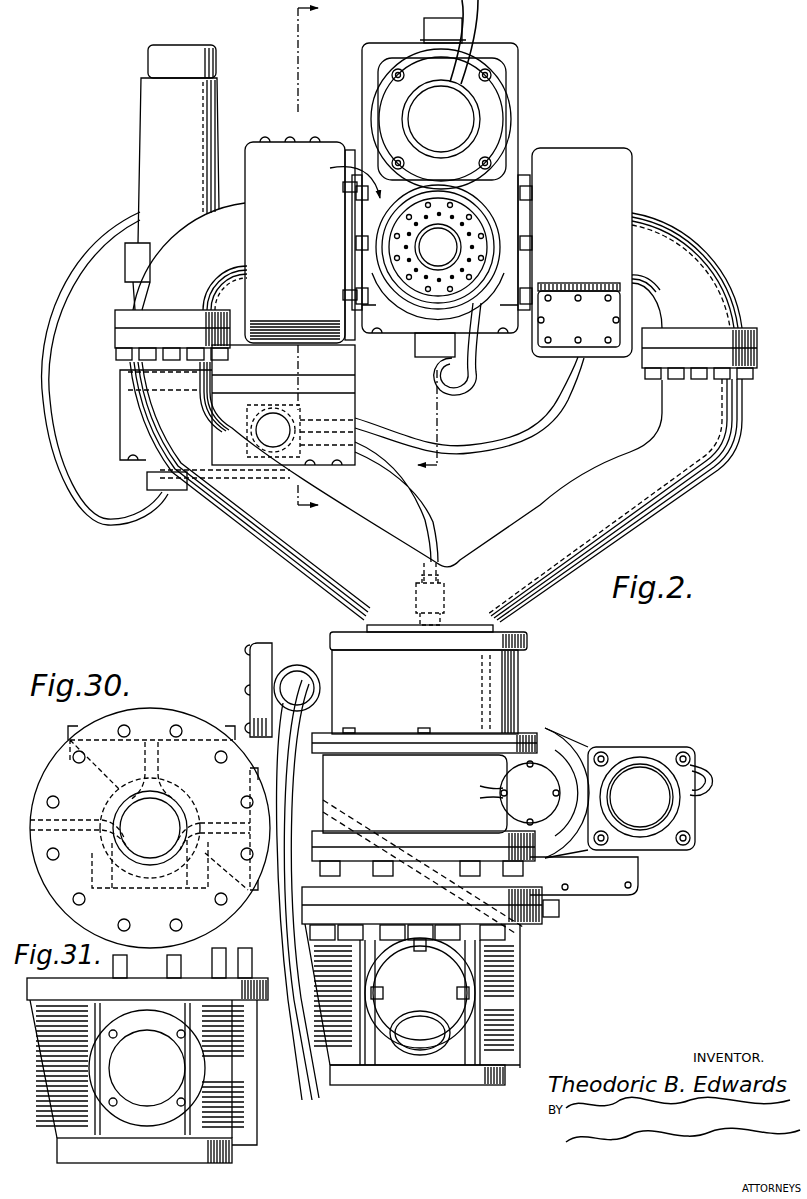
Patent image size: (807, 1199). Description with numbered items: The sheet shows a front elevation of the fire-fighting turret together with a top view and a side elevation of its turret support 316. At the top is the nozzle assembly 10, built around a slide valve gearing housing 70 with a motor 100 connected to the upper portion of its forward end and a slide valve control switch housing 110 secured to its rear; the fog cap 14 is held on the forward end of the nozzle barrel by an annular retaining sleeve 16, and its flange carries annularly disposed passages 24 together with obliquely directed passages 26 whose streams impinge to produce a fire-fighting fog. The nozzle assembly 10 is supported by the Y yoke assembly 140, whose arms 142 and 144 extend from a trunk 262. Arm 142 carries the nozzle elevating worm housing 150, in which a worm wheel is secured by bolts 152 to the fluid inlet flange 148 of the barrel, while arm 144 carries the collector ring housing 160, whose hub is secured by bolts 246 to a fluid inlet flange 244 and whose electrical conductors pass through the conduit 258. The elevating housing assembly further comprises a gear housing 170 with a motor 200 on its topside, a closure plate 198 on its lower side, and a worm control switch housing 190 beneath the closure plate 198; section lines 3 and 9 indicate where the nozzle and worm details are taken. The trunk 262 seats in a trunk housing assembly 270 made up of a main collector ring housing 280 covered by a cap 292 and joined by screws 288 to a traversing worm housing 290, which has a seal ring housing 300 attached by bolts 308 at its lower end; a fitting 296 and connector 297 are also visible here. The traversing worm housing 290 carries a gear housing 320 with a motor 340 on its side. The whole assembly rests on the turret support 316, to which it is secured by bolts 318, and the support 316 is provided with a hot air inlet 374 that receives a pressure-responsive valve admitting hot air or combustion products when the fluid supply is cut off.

In FIG. 2, the section line 3- 3 is at (427, 433).
In FIG. 2, the section line 9- 9 is at (305, 271).
In FIG. 2, the nozzle assembly 10 is at (339, 179).
In FIG. 2, the fog cap 14 is at (486, 252).
In FIG. 2, the annular retaining sleeve 16 is at (467, 254).
In FIG. 2, the passages 24 is at (478, 268).
In FIG. 2, the passages 26 is at (481, 236).
In FIG. 2, the slide valve gearing housing 70 is at (441, 94).
In FIG. 2, the motor 100 is at (441, 119).
In FIG. 2, the slide valve control switch housing 110 is at (524, 66).
In FIG. 2, the Y yoke assembly 140 is at (500, 532).
In FIG. 2, the arm 142 is at (181, 281).
In FIG. 2, the arm 144 is at (694, 296).
In FIG. 2, the fluid inlet flange 148 is at (352, 224).
In FIG. 2, the nozzle elevating worm housing 150 is at (276, 240).
In FIG. 2, the bolts 152 is at (346, 200).
In FIG. 2, the collector ring housing 160 is at (608, 252).
In FIG. 2, the gear housing 170 is at (281, 411).
In FIG. 2, the worm control switch housing 190 is at (119, 436).
In FIG. 2, the closure plate 198 is at (345, 388).
In FIG. 2, the motor 200 is at (172, 177).
In FIG. 2, the fluid inlet flange 244 is at (535, 283).
In FIG. 2, the bolts 246 is at (579, 319).
In FIG. 2, the conduit 258 is at (468, 349).
In FIG. 2, the trunk 262 is at (520, 636).
In FIG. 2, the trunk housing assembly 270 is at (271, 871).
In FIG. 2, the main collector ring housing 280 is at (525, 680).
In FIG. 2, the screws 288 is at (350, 732).
In FIG. 2, the traversing worm housing 290 is at (475, 774).
In FIG. 2, the cap 292 is at (335, 637).
In FIG. 2, the hose fitting 296 is at (304, 682).
In FIG. 2, the connector 297 is at (446, 606).
In FIG. 2, the seal ring housing 300 is at (332, 884).
In FIG. 2, the bolts 308 is at (430, 896).
In FIG. 2, the turret support 316 is at (438, 991).
In FIG. 30, the turret support 316 is at (212, 724).
In FIG. 31, the turret support 316 is at (258, 1120).
In FIG. 2, the bolts 318 is at (390, 928).
In FIG. 2, the gear housing 320 is at (631, 801).
In FIG. 2, the motor 340 is at (660, 812).
In FIG. 2, the hot air inlet 374 is at (420, 1042).